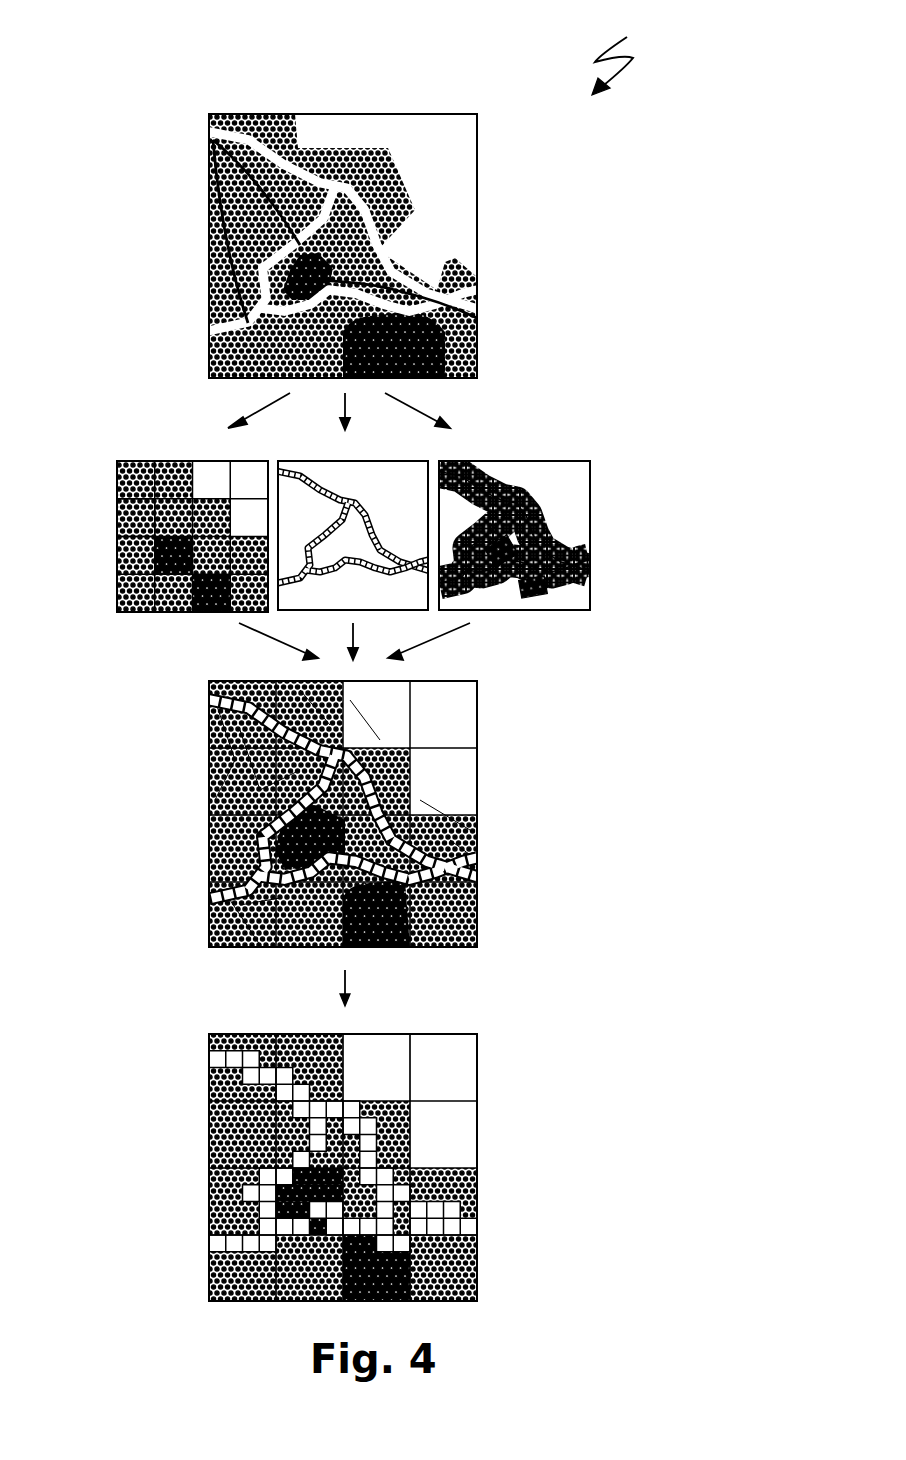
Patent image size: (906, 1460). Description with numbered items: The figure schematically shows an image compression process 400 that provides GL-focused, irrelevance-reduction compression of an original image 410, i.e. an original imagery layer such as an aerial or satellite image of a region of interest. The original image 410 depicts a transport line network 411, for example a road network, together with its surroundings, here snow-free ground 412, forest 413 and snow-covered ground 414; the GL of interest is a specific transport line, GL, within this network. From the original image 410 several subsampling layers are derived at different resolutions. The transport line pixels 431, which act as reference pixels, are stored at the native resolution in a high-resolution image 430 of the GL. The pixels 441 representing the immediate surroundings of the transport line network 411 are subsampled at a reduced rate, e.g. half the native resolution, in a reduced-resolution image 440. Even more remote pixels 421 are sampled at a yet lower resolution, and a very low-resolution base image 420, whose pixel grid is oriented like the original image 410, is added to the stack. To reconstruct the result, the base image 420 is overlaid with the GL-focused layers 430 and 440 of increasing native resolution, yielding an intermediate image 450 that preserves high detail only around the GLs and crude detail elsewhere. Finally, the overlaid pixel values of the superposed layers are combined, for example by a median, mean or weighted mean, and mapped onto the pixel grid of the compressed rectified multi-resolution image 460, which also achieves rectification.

The compression method 400 is at (640, 51).
The original image 410 is at (342, 246).
The GL network 411 is at (342, 243).
The snow-free ground 412 is at (213, 238).
The forest 413 is at (477, 318).
The snow-covered ground 414 is at (441, 137).
The geographic line GL is at (213, 323).
The low-resolution base image 420 is at (154, 515).
The image point of low-resolution base image 421 is at (117, 520).
The native, high-resolution image of GL 430 is at (353, 514).
The image point of high-resolution image 431 is at (370, 522).
The reduced resolution image of immediate GL surroundings 440 is at (519, 514).
The image point of reduced-resolution image 441 is at (540, 488).
The intermediate multi-resolution image 450 is at (477, 778).
The compressed rectified multi-resolution image 460 is at (477, 1078).